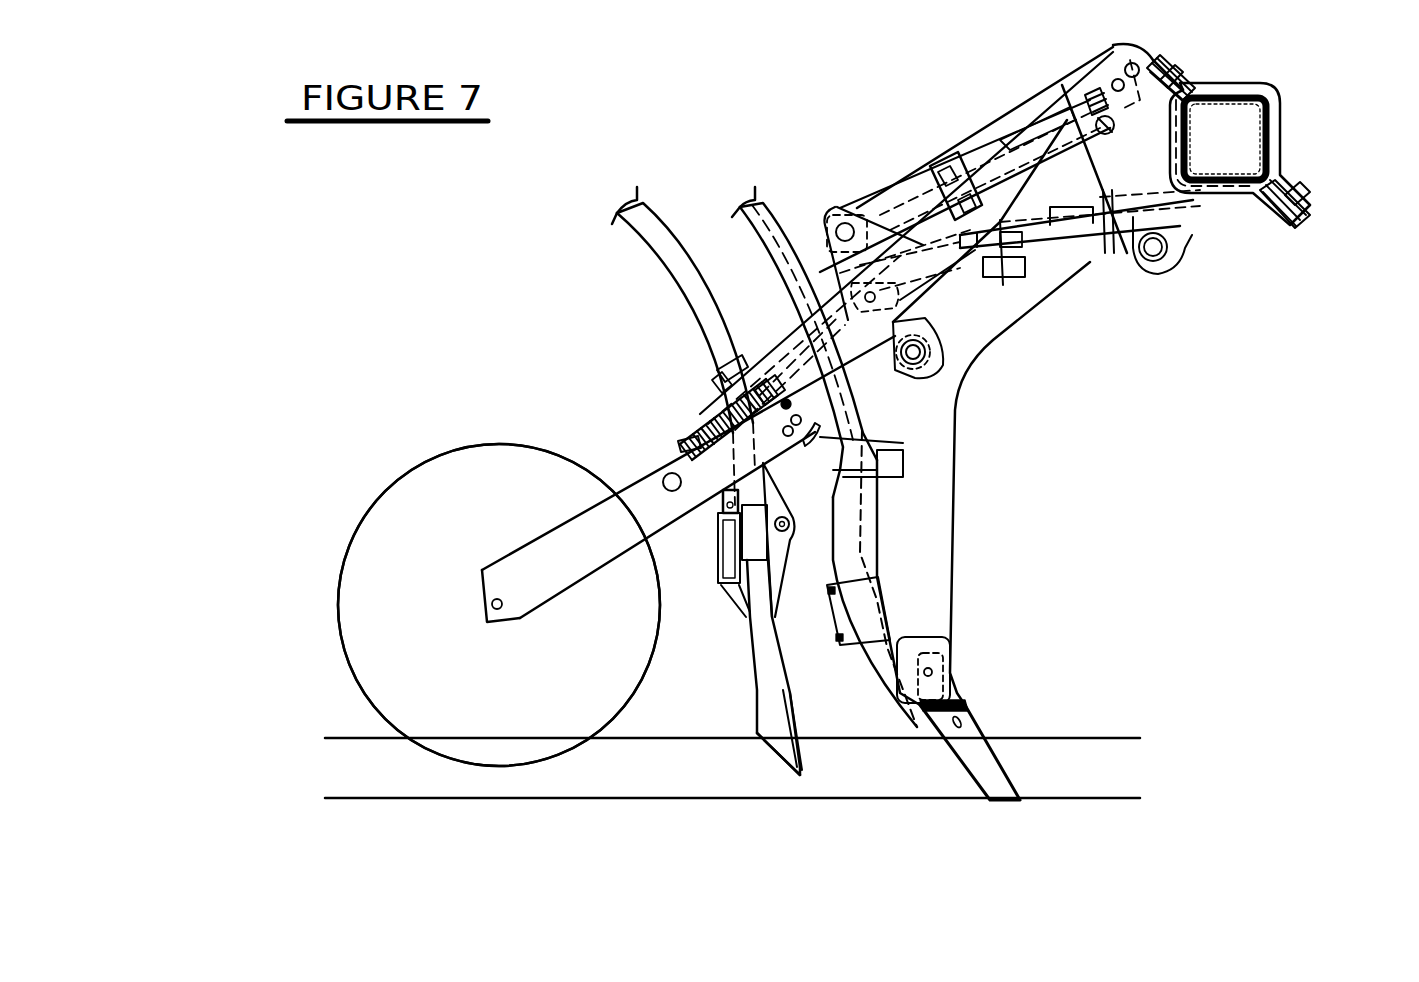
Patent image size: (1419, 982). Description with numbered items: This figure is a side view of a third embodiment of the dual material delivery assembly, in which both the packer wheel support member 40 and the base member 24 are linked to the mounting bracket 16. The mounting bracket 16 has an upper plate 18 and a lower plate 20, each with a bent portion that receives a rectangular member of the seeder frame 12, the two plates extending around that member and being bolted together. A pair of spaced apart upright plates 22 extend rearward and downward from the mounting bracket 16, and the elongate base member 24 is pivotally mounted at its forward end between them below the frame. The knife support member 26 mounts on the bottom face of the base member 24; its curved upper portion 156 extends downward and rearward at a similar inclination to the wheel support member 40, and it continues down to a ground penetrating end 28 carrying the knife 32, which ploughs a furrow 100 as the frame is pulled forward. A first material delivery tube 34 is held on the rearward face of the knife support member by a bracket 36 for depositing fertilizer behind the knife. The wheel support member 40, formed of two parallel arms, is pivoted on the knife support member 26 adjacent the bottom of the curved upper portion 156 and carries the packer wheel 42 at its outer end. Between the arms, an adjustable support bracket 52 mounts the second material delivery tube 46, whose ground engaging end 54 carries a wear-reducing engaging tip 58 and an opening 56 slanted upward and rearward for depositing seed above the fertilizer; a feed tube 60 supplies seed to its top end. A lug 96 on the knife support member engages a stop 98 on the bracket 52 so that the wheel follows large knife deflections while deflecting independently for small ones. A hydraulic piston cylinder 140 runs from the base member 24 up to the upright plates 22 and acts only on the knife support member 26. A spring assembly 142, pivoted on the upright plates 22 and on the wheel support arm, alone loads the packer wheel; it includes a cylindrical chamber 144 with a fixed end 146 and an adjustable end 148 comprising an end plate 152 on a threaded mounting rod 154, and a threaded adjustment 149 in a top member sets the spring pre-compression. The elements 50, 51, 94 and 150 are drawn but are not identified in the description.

The frame 12 is at (1237, 135).
The mounting bracket 16 is at (1183, 90).
The upper plate 18 is at (1273, 100).
The lower plate 20 is at (1262, 205).
The upright plates 22 is at (1137, 135).
The base member 24 is at (1108, 228).
The knife support member 26 is at (933, 507).
The ground penetrating end 28 is at (933, 687).
The knife 32 is at (1015, 772).
The first material delivery tube 34 is at (850, 545).
The bracket 36 is at (878, 607).
The packer wheel support member 40 is at (560, 547).
The packer wheel 42 is at (377, 595).
The second material delivery tube 46 is at (717, 550).
The adjustment cylinder 50 is at (747, 610).
The arm bracket 51 is at (690, 440).
The adjustable support bracket 52 is at (905, 373).
The ground engaging end 54 is at (773, 750).
The opening 56 is at (773, 750).
The engaging tip 58 is at (802, 772).
The feed tube 60 is at (650, 250).
The lower pivot cylinder 94 is at (1188, 215).
The lug 96 is at (897, 465).
The stop 98 is at (820, 440).
The furrow 100 is at (927, 780).
The hydraulic piston cylinder 140 is at (935, 167).
The spring assembly 142 is at (807, 330).
The cylindrical chamber 144 is at (750, 350).
The fixed end 146 is at (1023, 135).
The adjustable end 148 is at (733, 367).
The adjustment 149 is at (1052, 120).
The upper parallel link 150 is at (915, 212).
The end plate 152 is at (723, 407).
The threaded mounting rod 154 is at (723, 376).
The curved upper portion 156 is at (993, 317).